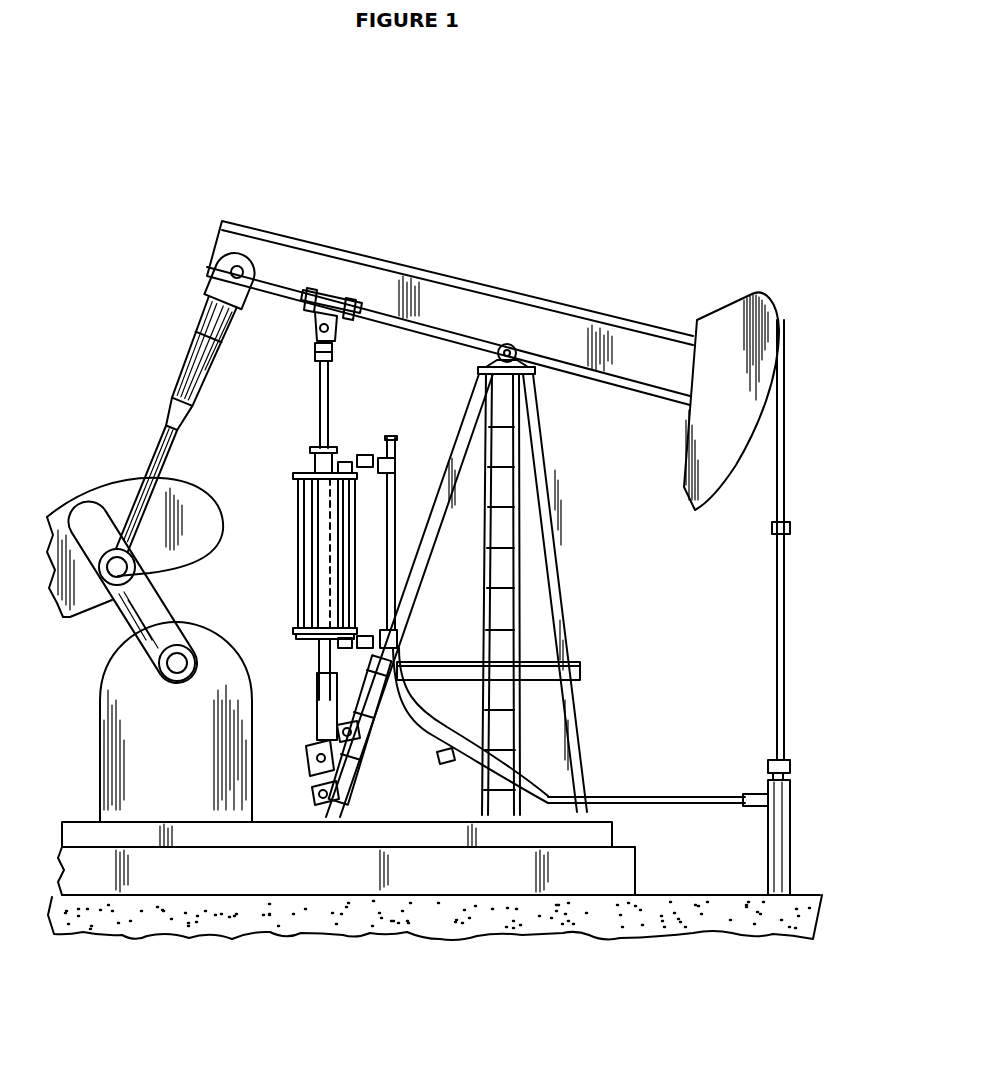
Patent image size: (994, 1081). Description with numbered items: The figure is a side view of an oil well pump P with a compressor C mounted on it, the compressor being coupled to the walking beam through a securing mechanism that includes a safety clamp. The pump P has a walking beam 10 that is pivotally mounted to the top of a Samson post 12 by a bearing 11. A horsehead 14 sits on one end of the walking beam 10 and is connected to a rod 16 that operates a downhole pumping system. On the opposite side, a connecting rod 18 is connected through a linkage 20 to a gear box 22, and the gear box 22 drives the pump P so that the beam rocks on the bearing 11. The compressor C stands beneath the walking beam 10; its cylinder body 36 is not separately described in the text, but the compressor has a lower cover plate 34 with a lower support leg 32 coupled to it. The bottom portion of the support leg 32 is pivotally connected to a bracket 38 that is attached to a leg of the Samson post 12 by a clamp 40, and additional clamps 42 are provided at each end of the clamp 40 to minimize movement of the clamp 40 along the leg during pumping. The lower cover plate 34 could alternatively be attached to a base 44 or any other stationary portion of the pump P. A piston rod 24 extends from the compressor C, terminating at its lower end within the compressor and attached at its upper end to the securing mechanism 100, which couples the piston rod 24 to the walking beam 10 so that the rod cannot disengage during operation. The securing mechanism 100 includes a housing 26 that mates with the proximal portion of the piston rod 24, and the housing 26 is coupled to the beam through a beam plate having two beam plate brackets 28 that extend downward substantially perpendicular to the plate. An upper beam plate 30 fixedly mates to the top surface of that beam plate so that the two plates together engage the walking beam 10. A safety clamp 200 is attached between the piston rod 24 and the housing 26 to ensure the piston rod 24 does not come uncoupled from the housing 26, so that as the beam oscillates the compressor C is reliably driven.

The oil well pump P is at (170, 240).
The securing mechanism 100 is at (292, 330).
The safety clamp 200 is at (313, 370).
The compressor C is at (283, 495).
The walking beam 10 is at (472, 298).
The bearing 11 is at (508, 352).
The Samson post 12 is at (462, 442).
The horsehead 14 is at (720, 343).
The rod 16 is at (770, 600).
The connecting rod 18 is at (197, 367).
The linkage 20 is at (127, 620).
The gear box 22 is at (190, 746).
The piston rod 24 is at (328, 407).
The housing 26 is at (337, 345).
The beam plate brackets 28 is at (337, 327).
The upper beam plate 30 is at (337, 307).
The lower support leg 32 is at (318, 668).
The lower cover plate 34 is at (300, 630).
The cylinder 36 is at (300, 548).
The bracket 38 is at (310, 757).
The clamp 40 is at (365, 773).
The additional clamps 42 is at (313, 795).
The base 44 is at (88, 835).